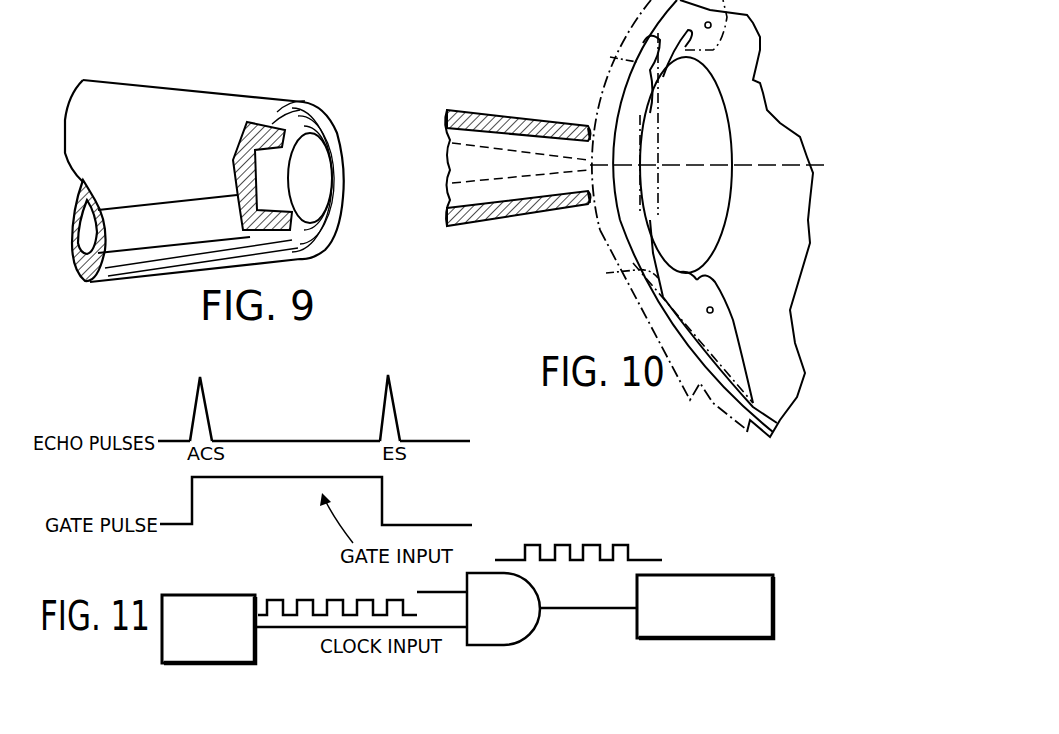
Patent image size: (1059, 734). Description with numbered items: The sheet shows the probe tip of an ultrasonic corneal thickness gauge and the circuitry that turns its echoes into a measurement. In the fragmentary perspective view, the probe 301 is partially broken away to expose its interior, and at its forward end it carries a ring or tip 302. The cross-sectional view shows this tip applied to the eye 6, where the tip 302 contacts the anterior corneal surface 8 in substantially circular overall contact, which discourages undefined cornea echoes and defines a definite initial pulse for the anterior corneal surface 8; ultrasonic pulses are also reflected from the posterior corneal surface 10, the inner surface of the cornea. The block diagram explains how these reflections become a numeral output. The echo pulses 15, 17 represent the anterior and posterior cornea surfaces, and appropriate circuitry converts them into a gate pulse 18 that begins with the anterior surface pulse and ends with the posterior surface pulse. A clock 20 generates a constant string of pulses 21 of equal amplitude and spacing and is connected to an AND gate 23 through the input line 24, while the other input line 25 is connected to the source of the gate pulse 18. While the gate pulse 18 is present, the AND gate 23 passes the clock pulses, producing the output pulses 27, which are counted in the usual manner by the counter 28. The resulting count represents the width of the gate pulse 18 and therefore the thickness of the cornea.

In FIG. 9, the probe 301 is at (178, 110).
In FIG. 10, the probe 301 is at (477, 192).
In FIG. 9, the forward ring or tip 302 is at (317, 133).
In FIG. 10, the forward ring or tip 302 is at (582, 210).
In FIG. 10, the anterior corneal surface 8 is at (586, 152).
In FIG. 10, the eye 6 is at (745, 81).
In FIG. 10, the posterior corneal surface 10 is at (612, 272).
In FIG. 11, the anterior cornea surface pulse 15 is at (206, 403).
In FIG. 11, the posterior cornea surface pulse 17 is at (394, 402).
In FIG. 11, the gate pulse 18 is at (327, 477).
In FIG. 11, the clock 20 is at (195, 596).
In FIG. 11, the clock pulses 21 is at (302, 600).
In FIG. 11, the AND gate 23 is at (517, 641).
In FIG. 11, the input line 24 is at (452, 630).
In FIG. 11, the input line 25 is at (440, 591).
In FIG. 11, the output pulses 27 is at (594, 545).
In FIG. 11, the counter 28 is at (718, 575).